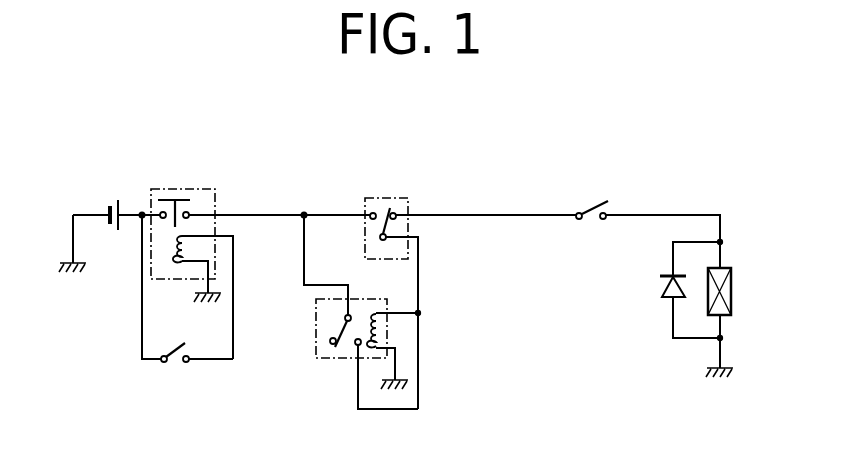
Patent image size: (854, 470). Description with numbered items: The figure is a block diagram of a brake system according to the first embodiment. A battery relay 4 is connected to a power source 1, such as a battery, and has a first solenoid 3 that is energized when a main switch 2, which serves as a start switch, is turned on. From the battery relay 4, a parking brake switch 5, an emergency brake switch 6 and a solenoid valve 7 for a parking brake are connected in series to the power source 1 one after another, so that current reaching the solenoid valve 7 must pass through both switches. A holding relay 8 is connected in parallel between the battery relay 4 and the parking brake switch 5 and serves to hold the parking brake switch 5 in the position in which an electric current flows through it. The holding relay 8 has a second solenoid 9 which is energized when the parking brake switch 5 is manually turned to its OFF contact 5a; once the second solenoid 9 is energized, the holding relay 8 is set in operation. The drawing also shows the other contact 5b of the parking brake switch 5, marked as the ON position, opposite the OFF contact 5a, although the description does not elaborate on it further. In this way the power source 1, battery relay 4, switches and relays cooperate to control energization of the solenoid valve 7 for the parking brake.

The power source 1 is at (112, 194).
The main switch 2 is at (176, 367).
The first solenoid 3 is at (178, 251).
The battery relay 4 is at (176, 187).
The parking brake switch 5 is at (389, 271).
The OFF contact 5a is at (370, 212).
The ON contact 5b is at (397, 212).
The emergency brake switch 6 is at (591, 228).
The solenoid valve 7 is at (737, 288).
The holding relay 8 is at (327, 365).
The second solenoid 9 is at (381, 340).